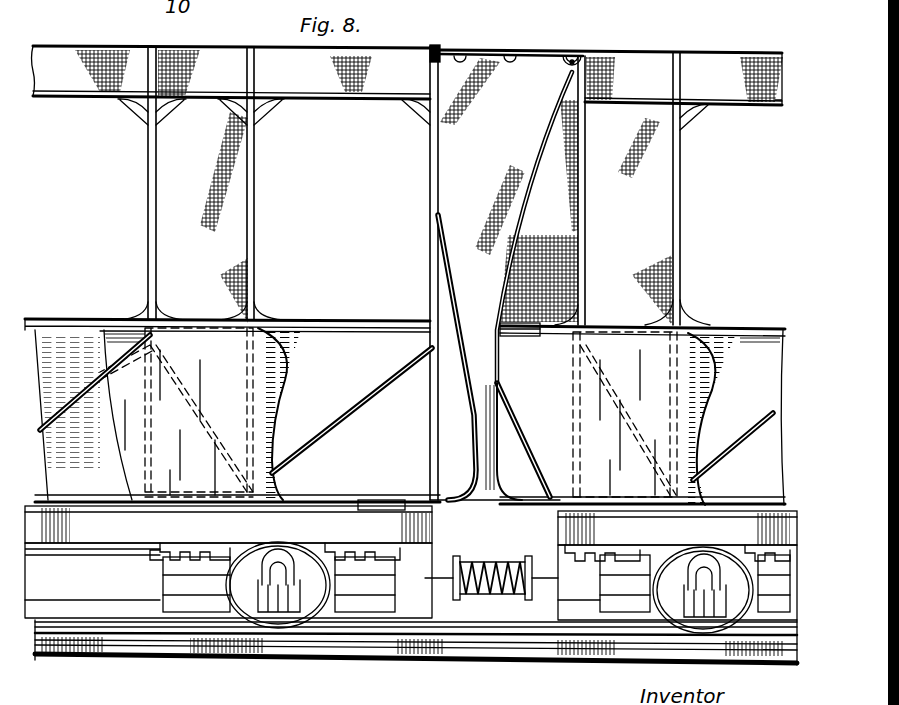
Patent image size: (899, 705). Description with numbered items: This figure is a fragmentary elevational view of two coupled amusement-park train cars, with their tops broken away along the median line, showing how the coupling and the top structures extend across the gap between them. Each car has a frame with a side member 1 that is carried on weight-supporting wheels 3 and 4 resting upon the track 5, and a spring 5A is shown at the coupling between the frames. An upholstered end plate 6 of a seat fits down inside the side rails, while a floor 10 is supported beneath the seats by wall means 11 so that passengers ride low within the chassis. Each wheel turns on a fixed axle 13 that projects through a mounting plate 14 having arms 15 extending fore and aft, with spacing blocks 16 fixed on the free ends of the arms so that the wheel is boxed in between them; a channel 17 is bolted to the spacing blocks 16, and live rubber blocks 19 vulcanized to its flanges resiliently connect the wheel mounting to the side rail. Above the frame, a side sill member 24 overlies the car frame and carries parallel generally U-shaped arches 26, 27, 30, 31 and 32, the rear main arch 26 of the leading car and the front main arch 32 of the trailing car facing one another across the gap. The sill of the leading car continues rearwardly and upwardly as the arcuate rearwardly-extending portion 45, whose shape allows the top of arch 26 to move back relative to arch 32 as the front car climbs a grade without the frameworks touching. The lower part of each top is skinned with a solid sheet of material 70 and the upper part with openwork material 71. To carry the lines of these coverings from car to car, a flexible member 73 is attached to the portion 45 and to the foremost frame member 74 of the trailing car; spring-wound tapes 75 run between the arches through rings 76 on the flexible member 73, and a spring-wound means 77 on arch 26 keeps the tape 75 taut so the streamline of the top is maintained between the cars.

The side member 1 is at (422, 535).
The weight-supporting wheel 3 is at (278, 585).
The weight-supporting wheel 4 is at (703, 590).
The track 5 is at (330, 640).
The spring 5A is at (505, 560).
The end plate 6 is at (410, 419).
The floor 10 is at (118, 618).
The wall means 11 is at (75, 586).
The fixed axle 13 is at (272, 612).
The mounting plate 14 is at (278, 565).
The arm 15 is at (200, 618).
The spacing block 16 is at (476, 584).
The channel 17 is at (205, 550).
The live rubber block 19 is at (165, 560).
The side sill member 24 is at (348, 495).
The arch 26 is at (585, 210).
The arch 27 is at (682, 200).
The arch 30 is at (148, 158).
The arch 31 is at (258, 150).
The arch 32 is at (431, 157).
The rearwardly-extending portion 45 is at (505, 240).
The solid sheet of material 70 is at (318, 345).
The openwork material 71 is at (232, 193).
The flexible member 73 is at (533, 72).
The foremost frame member 74 is at (445, 290).
The spring-wound tape 75 is at (512, 52).
The ring 76 is at (460, 52).
The spring-wound means 77 is at (590, 46).